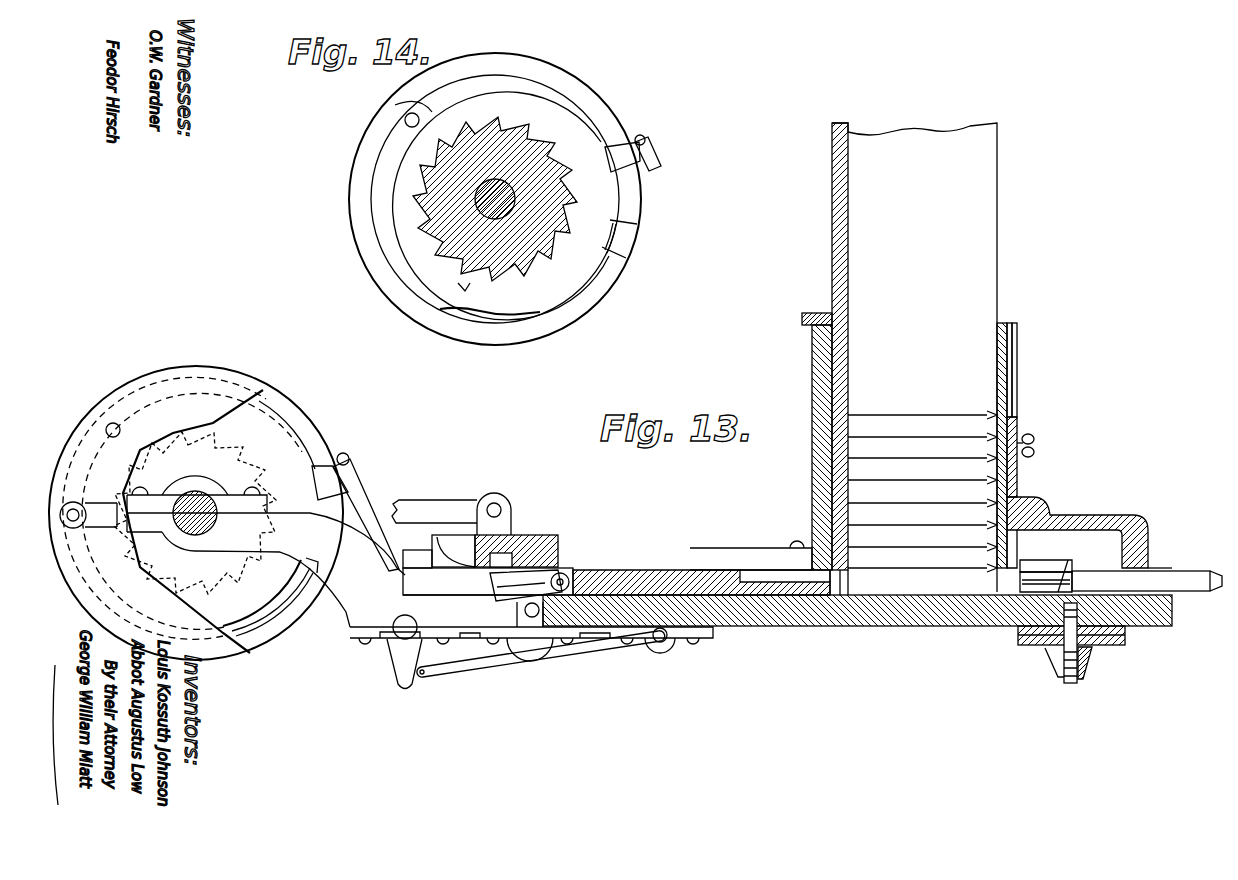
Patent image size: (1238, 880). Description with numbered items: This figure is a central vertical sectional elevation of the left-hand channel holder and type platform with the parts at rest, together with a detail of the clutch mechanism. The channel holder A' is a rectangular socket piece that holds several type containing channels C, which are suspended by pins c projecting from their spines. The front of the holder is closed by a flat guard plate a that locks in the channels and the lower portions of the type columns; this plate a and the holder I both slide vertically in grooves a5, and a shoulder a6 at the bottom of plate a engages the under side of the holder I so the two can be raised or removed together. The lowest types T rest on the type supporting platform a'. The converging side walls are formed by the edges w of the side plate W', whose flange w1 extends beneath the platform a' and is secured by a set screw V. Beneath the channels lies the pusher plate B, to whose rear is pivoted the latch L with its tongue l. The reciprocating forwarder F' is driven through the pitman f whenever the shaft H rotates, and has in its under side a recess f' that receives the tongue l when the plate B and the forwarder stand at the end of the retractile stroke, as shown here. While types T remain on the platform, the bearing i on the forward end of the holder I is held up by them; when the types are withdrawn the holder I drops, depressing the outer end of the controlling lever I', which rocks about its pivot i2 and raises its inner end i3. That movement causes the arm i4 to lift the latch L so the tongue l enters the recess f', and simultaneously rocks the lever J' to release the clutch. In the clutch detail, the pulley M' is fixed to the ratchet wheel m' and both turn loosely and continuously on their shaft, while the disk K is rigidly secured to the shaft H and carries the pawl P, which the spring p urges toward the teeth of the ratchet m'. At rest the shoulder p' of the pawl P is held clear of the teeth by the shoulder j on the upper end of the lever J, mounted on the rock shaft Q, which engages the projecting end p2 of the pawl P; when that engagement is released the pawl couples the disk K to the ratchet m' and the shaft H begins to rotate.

In FIG. 14, the clutch disk K is at (598, 301).
In FIG. 13, the clutch disk K is at (330, 422).
In FIG. 14, the pawl P is at (490, 206).
In FIG. 14, the ratchet wheel m' is at (509, 199).
In FIG. 14, the shaft H is at (510, 185).
In FIG. 13, the shaft H is at (203, 508).
In FIG. 14, the shoulder of pawl p' is at (490, 298).
In FIG. 14, the spring p is at (581, 263).
In FIG. 13, the spring p is at (200, 514).
In FIG. 14, the projecting end of pawl p2 is at (636, 137).
In FIG. 13, the projecting end of pawl p2 is at (335, 459).
In FIG. 14, the shoulder of lever j is at (650, 138).
In FIG. 13, the shoulder of lever j is at (346, 455).
In FIG. 14, the lever J is at (656, 154).
In FIG. 13, the lever J is at (366, 515).
In FIG. 13, the pulley M' is at (232, 551).
In FIG. 13, the pitman f is at (451, 505).
In FIG. 13, the recess f' is at (518, 528).
In FIG. 13, the block F' is at (506, 543).
In FIG. 13, the pusher plate B is at (690, 566).
In FIG. 13, the tongue of latch l is at (507, 580).
In FIG. 13, the latch L is at (529, 586).
In FIG. 13, the arm i4 is at (515, 631).
In FIG. 13, the rock shaft Q is at (403, 630).
In FIG. 13, the lever J' is at (404, 664).
In FIG. 13, the controlling lever I' is at (541, 656).
In FIG. 13, the inner end of controlling lever i3 is at (430, 684).
In FIG. 13, the pivot i2 is at (660, 655).
In FIG. 13, the type containing channel C is at (924, 357).
In FIG. 13, the pin c is at (817, 306).
In FIG. 13, the channel holder A' is at (806, 447).
In FIG. 13, the groove a5 is at (1030, 370).
In FIG. 13, the front plate a is at (1029, 370).
In FIG. 13, the wing nut W' is at (1039, 442).
In FIG. 13, the holder I is at (1077, 526).
In FIG. 13, the type T is at (1147, 566).
In FIG. 13, the bearing i is at (1160, 548).
In FIG. 13, the shoulder a6 is at (1045, 555).
In FIG. 13, the edge of plate w is at (1046, 575).
In FIG. 13, the type supporting platform a' is at (1077, 565).
In FIG. 13, the flange w1 is at (1067, 643).
In FIG. 13, the set screw V is at (1078, 663).